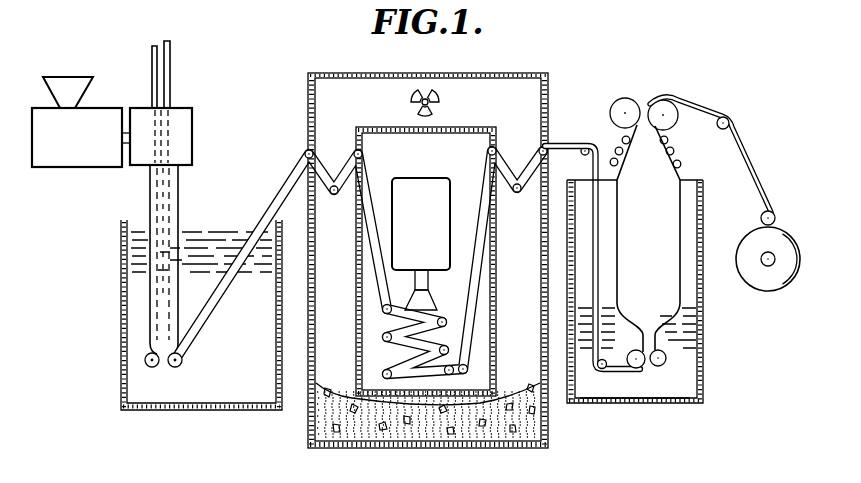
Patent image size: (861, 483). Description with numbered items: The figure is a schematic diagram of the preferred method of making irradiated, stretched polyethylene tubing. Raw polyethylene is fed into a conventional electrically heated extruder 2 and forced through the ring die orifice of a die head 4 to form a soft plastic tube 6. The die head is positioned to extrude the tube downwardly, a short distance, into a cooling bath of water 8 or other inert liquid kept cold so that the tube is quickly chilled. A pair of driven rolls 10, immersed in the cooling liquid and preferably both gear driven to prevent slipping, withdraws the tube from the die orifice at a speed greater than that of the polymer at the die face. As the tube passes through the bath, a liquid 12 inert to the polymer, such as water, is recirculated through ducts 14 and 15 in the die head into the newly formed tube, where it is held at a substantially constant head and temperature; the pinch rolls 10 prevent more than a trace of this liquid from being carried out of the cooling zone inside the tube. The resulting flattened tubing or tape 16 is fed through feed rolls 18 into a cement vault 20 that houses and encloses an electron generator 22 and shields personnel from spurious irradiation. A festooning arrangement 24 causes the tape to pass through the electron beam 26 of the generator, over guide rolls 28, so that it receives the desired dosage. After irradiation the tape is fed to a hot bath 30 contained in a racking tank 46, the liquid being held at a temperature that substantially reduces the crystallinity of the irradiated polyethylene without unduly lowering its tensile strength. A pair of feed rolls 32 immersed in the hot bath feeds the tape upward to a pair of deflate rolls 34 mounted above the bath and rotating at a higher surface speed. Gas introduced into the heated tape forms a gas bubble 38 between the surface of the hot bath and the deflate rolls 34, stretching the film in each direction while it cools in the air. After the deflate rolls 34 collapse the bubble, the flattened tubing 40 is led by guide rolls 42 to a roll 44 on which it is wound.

The extruder 2 is at (84, 168).
The die head 4 is at (192, 145).
The soft plastic tube 6 is at (172, 218).
The cooling bath of water 8 is at (121, 310).
The driven rolls 10 is at (147, 363).
The liquid 12 is at (183, 238).
The duct 14 is at (172, 89).
The duct 15 is at (152, 88).
The flattened tubing or tape 16 is at (289, 185).
The feed rolls 18 is at (305, 150).
The vault 20 is at (325, 410).
The electron generator 22 is at (433, 165).
The festooning arrangement 24 is at (383, 335).
The electron beam 26 is at (428, 320).
The guide rollers at chamber exit 28 is at (588, 146).
The hot bath 30 is at (690, 383).
The feed rolls 32 is at (667, 358).
The deflate rolls 34 is at (630, 105).
The gas bubble 38 is at (672, 238).
The flattened tubing 40 is at (695, 103).
The guide rolls 42 is at (727, 121).
The roll 44 is at (768, 266).
The racking tank 46 is at (668, 401).